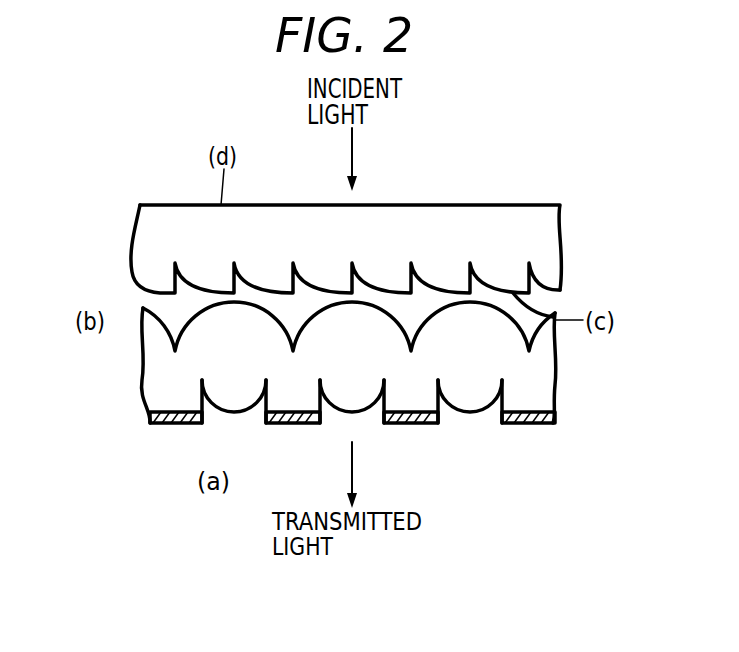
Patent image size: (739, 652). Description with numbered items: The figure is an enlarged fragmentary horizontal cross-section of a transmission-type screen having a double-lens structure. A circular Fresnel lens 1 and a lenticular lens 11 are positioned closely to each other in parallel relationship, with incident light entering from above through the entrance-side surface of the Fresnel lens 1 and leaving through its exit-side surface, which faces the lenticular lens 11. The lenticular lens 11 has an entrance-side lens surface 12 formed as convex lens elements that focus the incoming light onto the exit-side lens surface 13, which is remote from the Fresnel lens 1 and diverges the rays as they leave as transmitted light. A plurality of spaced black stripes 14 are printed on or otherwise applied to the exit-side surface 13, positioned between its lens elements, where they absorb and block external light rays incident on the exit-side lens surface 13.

The circular Fresnel lens 1 is at (472, 196).
The lenticular lens 11 is at (256, 426).
The entrance-side lens surface 12 is at (187, 323).
The exit-side lens surface 13 is at (220, 412).
The black stripes 14 is at (413, 424).